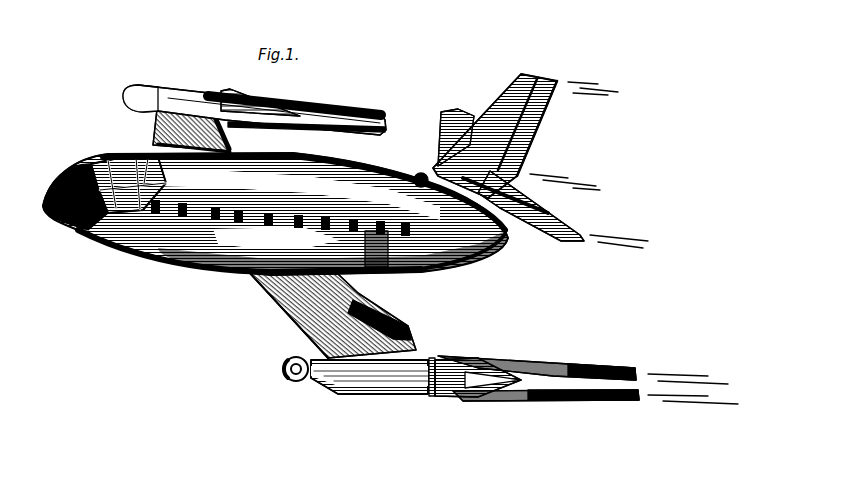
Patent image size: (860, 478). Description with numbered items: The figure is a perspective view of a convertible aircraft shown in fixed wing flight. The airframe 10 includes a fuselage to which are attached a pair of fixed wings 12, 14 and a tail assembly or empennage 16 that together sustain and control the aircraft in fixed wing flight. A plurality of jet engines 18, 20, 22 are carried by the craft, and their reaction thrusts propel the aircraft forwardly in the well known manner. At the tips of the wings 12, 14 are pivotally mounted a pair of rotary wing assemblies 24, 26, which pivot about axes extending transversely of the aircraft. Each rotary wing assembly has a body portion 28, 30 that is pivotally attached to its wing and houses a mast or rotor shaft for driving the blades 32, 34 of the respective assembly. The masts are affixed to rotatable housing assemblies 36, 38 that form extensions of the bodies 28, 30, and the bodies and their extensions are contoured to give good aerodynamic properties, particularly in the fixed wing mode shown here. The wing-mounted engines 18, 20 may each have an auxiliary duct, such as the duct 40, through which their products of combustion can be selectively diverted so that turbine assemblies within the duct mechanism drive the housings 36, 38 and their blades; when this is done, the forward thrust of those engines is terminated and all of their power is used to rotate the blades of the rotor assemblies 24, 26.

The airframe 10 is at (192, 271).
The fixed wing 12 is at (146, 108).
The fixed wing 14 is at (273, 298).
The tail assembly 16 is at (546, 137).
The jet engine 18 is at (133, 141).
The jet engine 20 is at (283, 368).
The jet engine 22 is at (413, 165).
The rotary wing assembly 24 is at (254, 92).
The rotary wing assembly 26 is at (496, 380).
The body portion 28 is at (147, 77).
The body portion 30 is at (352, 388).
The blade 32 is at (360, 97).
The blade 34 is at (543, 352).
The rotatable housing assembly 36 is at (230, 98).
The rotatable housing assembly 38 is at (443, 390).
The auxiliary duct 40 is at (394, 321).